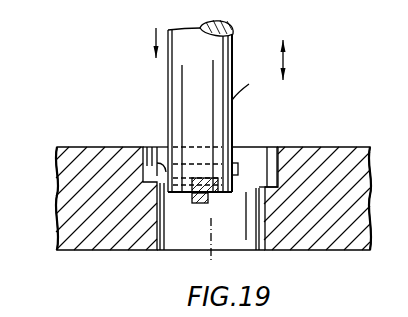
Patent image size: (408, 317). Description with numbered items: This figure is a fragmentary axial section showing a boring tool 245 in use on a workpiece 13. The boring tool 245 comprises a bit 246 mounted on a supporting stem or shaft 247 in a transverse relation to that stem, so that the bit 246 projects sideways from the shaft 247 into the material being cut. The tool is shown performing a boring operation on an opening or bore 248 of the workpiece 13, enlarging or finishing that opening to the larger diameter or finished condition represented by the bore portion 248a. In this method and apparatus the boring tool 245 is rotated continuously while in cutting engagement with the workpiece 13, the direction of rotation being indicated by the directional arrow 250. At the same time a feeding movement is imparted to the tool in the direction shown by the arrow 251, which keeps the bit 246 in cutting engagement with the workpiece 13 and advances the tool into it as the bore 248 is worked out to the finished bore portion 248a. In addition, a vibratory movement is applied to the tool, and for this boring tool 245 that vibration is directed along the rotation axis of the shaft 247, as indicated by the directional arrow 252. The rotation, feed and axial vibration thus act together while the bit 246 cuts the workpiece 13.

The workpiece 13 is at (76, 221).
The boring tool 245 is at (240, 122).
The bit 246 is at (163, 160).
The supporting stem or shaft 247 is at (233, 46).
The opening or bore 248 is at (167, 228).
The bore portion 248a is at (260, 158).
The directional arrow 250 is at (152, 87).
The arrow 251 is at (154, 40).
The directional arrow 252 is at (286, 62).